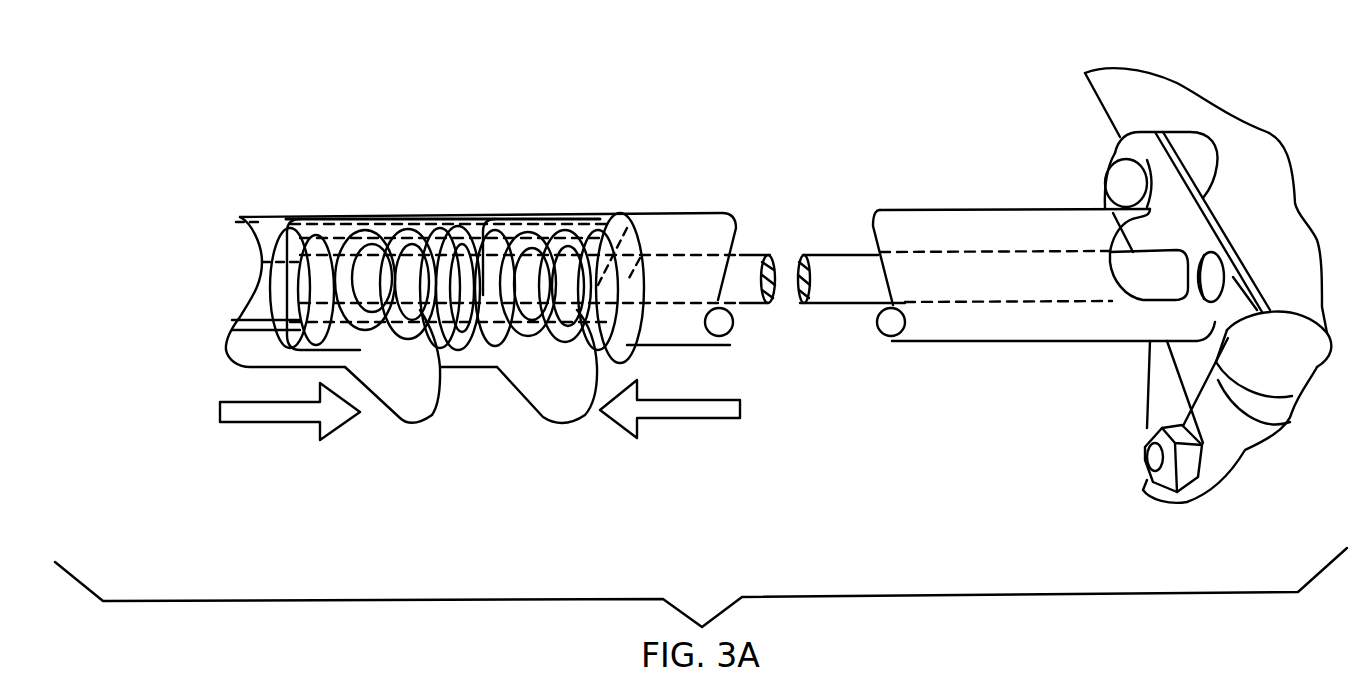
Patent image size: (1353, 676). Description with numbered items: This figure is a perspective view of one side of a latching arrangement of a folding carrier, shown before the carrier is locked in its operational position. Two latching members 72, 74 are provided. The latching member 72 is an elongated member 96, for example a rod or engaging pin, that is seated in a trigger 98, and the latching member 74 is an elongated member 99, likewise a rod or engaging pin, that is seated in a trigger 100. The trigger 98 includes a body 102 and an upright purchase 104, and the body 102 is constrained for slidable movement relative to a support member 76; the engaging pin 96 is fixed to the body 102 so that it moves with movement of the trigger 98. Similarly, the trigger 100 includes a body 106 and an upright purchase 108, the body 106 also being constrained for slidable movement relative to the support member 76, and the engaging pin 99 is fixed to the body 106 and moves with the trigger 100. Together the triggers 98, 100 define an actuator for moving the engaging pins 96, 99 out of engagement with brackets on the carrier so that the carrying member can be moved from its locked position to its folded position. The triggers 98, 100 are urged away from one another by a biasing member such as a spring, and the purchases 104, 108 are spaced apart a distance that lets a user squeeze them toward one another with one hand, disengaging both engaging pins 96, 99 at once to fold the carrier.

The latching member 72 is at (236, 372).
The latching member 74 is at (603, 454).
The support member 76 is at (998, 342).
The elongated member 96 is at (847, 263).
The trigger 98 is at (564, 170).
The elongated member 99 is at (258, 213).
The trigger 100 is at (350, 192).
The body 102 is at (592, 360).
The upright purchase 104 is at (563, 414).
The body 106 is at (462, 218).
The upright purchase 108 is at (408, 414).